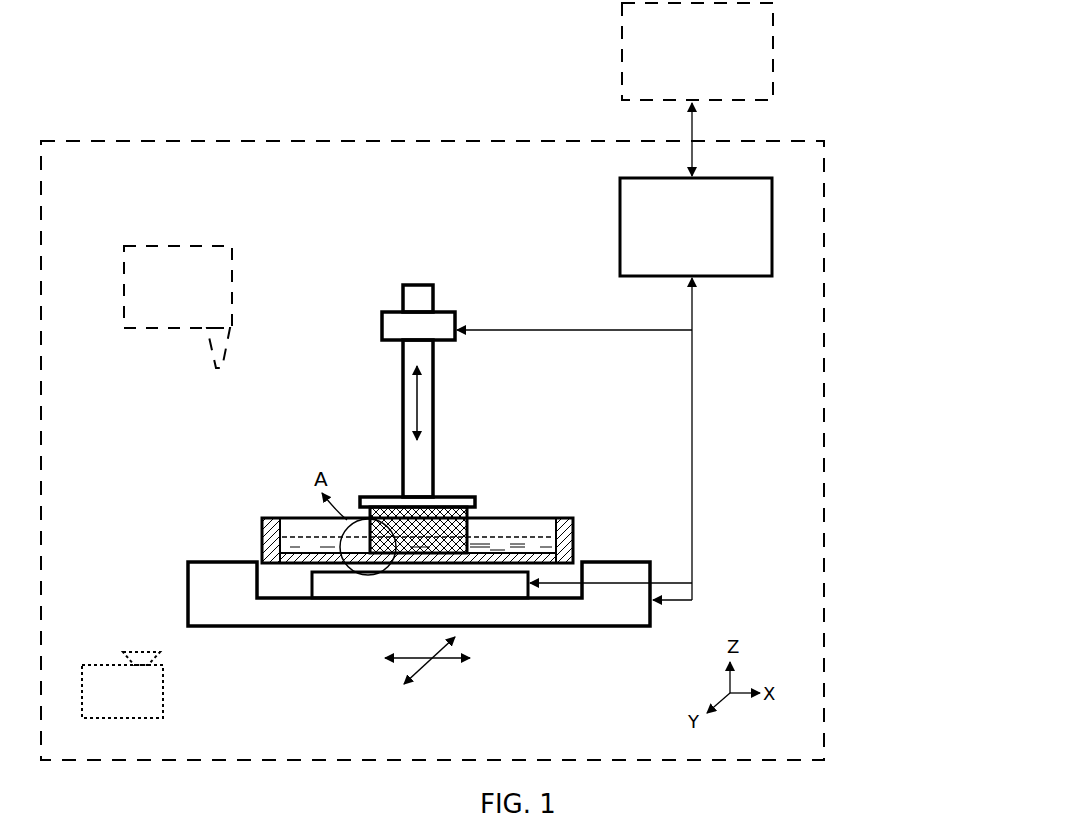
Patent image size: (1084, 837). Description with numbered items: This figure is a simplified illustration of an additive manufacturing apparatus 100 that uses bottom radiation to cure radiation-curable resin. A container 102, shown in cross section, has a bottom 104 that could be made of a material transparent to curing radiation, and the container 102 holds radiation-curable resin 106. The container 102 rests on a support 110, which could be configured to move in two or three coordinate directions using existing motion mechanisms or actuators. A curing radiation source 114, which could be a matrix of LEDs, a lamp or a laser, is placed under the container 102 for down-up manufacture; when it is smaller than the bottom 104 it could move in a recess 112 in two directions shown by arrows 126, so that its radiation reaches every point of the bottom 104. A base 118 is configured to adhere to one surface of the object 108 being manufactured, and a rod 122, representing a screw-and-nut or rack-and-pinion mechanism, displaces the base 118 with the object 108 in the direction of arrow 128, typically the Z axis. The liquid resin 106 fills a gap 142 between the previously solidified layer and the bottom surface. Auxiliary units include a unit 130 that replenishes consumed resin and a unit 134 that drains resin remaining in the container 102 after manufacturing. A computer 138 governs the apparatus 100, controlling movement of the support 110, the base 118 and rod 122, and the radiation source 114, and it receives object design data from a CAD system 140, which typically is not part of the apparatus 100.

The additive manufacturing apparatus 100 is at (182, 143).
The container 102 is at (576, 525).
The bottom 104 is at (288, 548).
The radiation-curable resin 106 is at (312, 542).
The object 108 is at (468, 514).
The support 110 is at (208, 583).
The recess 112 is at (578, 572).
The curing radiation source 114 is at (493, 583).
The base 118 is at (440, 497).
The rod 122 is at (412, 300).
The arrows 126 is at (457, 583).
The arrow 128 is at (420, 405).
The unit 130 is at (178, 307).
The unit 134 is at (122, 685).
The computer 138 is at (696, 227).
The Computer Aided Design (CAD) system 140 is at (697, 51).
The gap 142 is at (397, 563).